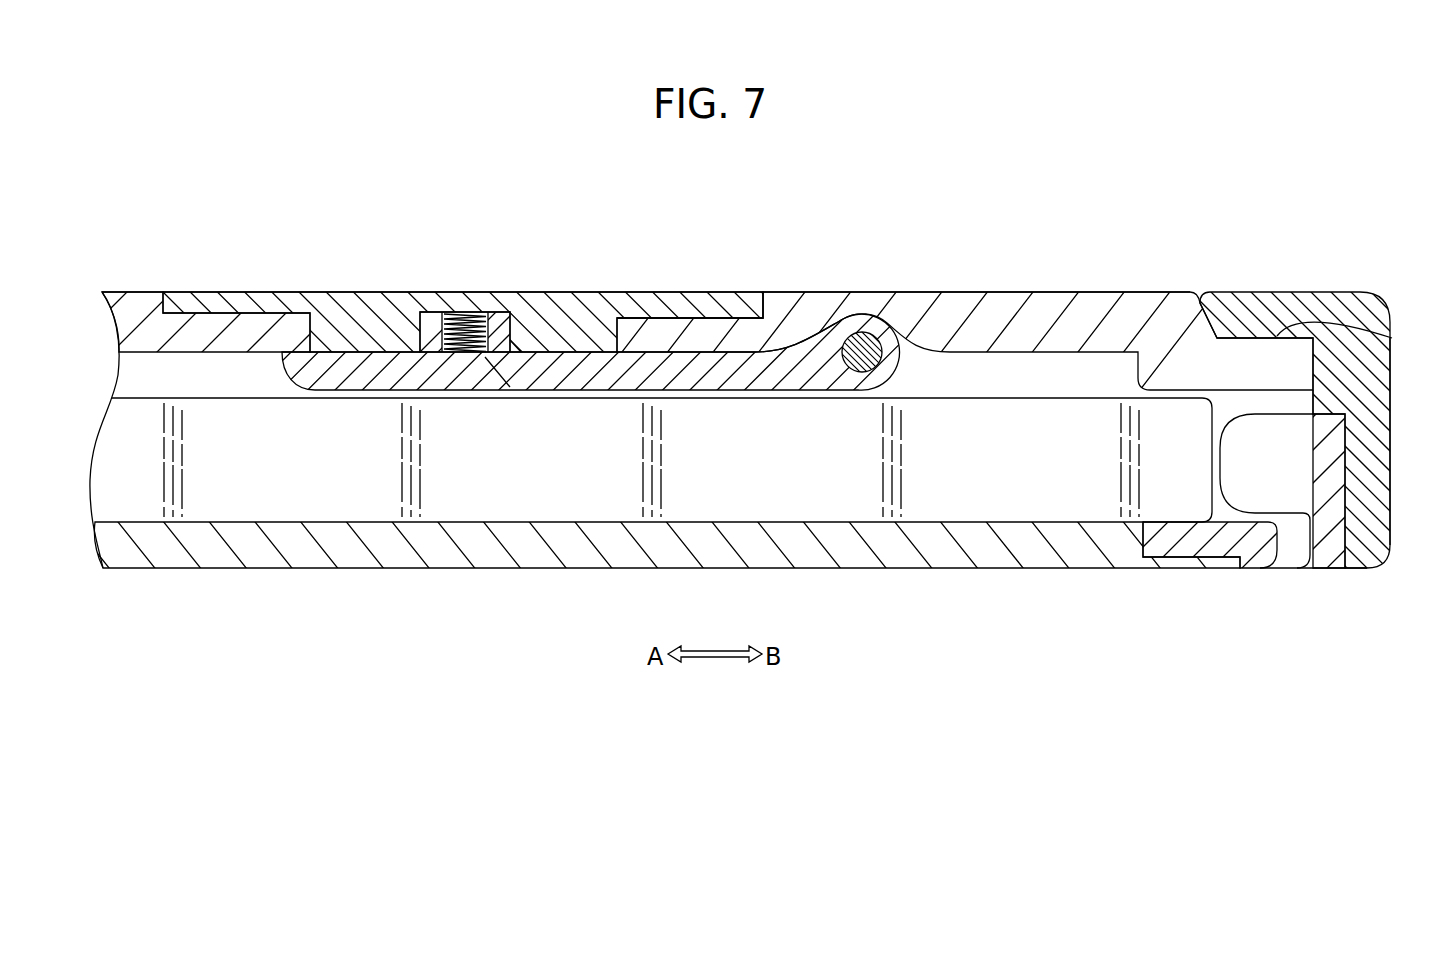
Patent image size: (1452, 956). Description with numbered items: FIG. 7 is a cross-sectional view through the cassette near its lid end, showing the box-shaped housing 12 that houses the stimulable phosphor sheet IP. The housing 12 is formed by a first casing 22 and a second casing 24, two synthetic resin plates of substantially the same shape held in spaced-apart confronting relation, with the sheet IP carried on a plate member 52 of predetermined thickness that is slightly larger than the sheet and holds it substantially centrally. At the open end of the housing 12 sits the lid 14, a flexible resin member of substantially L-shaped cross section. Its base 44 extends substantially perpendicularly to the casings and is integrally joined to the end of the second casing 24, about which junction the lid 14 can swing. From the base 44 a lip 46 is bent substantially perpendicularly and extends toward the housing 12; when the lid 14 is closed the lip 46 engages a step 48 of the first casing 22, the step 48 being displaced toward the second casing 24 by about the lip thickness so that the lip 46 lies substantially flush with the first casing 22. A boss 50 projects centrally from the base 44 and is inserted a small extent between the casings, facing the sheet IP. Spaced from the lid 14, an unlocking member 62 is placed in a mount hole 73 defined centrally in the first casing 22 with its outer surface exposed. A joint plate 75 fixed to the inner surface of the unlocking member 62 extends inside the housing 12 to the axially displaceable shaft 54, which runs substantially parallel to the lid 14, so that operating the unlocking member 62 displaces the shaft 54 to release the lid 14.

The housing 12 is at (968, 290).
The lid 14 is at (1393, 390).
The first casing 22 is at (1092, 302).
The second casing 24 is at (540, 557).
The base 44 is at (1370, 502).
The lip 46 is at (1247, 302).
The step 48 is at (1384, 339).
The boss 50 is at (1258, 495).
The plate member 52 is at (1054, 444).
The shaft 54 is at (862, 333).
The unlocking member 62 is at (542, 302).
The mount hole 73 is at (667, 307).
The joint plate 75 is at (727, 384).
The stimulable phosphor sheet IP is at (303, 495).